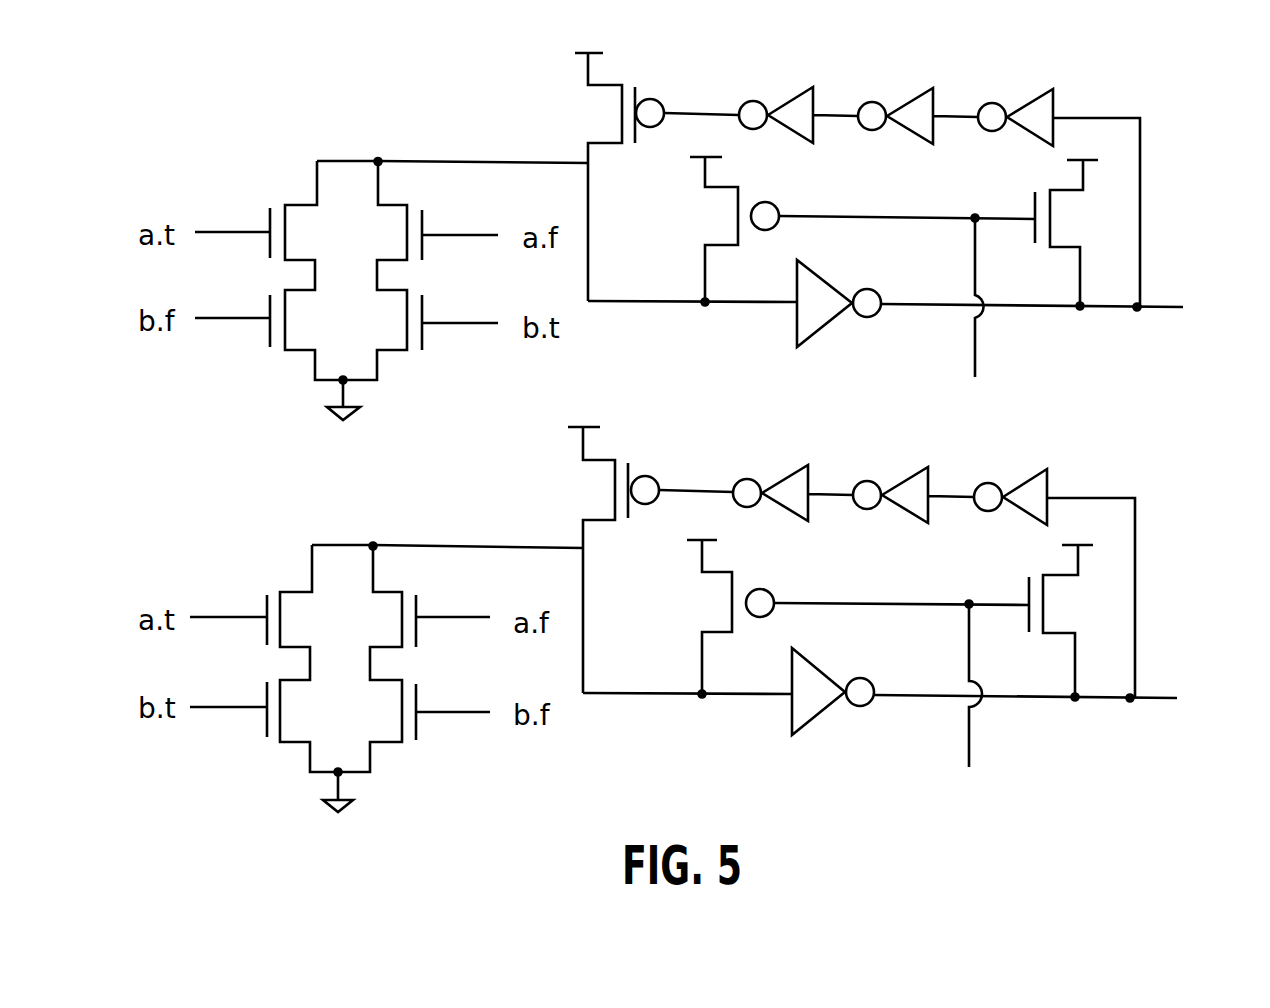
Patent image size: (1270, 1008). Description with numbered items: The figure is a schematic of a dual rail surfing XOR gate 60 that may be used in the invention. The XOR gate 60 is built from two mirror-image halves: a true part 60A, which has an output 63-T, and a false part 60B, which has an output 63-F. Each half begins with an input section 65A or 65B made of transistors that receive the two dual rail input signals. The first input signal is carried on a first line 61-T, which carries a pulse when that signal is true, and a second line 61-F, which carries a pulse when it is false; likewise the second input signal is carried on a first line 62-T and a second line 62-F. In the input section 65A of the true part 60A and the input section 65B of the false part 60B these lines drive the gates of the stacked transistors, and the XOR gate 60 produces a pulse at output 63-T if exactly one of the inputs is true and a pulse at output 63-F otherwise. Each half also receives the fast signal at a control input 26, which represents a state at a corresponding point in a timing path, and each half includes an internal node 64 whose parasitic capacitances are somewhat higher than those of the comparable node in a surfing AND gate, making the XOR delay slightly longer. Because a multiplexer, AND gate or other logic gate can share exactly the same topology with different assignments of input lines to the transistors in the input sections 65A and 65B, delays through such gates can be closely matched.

The XOR gate 60 is at (366, 100).
The true part 60A is at (820, 208).
The false part 60B is at (810, 603).
The input section 65A is at (312, 140).
The input section 65B is at (322, 525).
The first line 61-T is at (228, 232).
The second line 61-F is at (455, 235).
The first line 62-T is at (455, 323).
The second line 62-F is at (243, 318).
The node 64 is at (703, 306).
The control input 26 is at (976, 345).
The output 63-T is at (1165, 312).
The output 63-F is at (1160, 702).